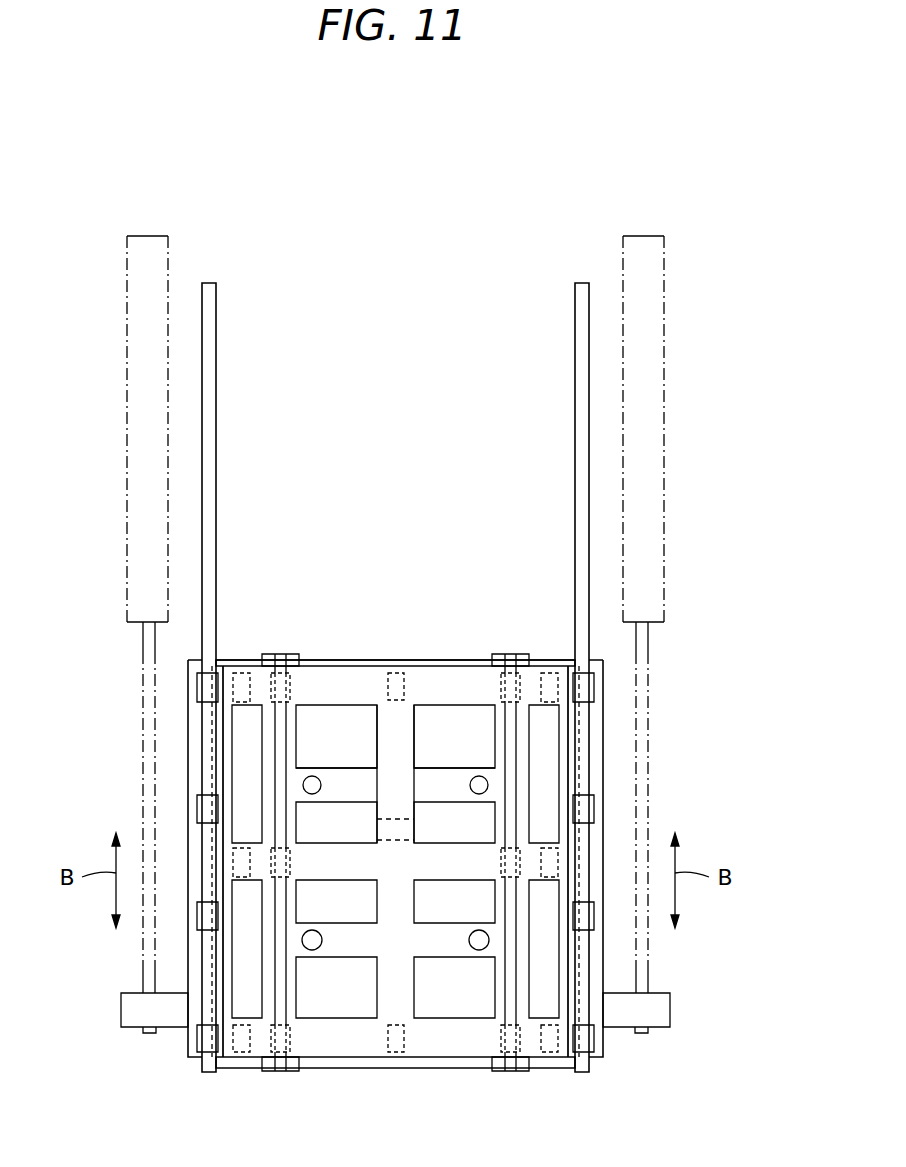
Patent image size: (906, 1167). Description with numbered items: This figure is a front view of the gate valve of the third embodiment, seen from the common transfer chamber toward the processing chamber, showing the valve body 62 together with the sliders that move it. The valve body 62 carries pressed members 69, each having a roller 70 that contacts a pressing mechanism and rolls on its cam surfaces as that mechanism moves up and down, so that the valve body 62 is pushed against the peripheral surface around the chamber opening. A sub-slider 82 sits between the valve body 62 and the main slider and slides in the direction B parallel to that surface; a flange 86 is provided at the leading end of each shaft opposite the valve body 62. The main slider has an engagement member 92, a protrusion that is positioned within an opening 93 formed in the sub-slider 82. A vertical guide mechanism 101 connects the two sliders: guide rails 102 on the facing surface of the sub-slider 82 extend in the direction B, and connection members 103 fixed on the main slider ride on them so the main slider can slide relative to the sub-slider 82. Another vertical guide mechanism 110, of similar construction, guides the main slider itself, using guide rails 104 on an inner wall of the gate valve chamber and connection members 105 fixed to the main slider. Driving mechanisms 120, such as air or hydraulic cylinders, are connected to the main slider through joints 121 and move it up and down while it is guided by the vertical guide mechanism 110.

The valve body 62 is at (378, 660).
The pressed member 69 is at (256, 660).
The roller 70 is at (241, 703).
The sub-slider 82 is at (353, 772).
The flange 86 is at (312, 776).
The engagement member 92 is at (377, 816).
The opening 93 is at (425, 803).
The vertical guide mechanism 101 is at (310, 660).
The guide rail 102 is at (232, 782).
The connection member 103 is at (303, 671).
The guide rail 104 is at (216, 484).
The connection member 105 is at (197, 688).
The vertical guide mechanism 110 is at (194, 662).
The driving mechanism 120 is at (127, 566).
The joint 121 is at (132, 1015).